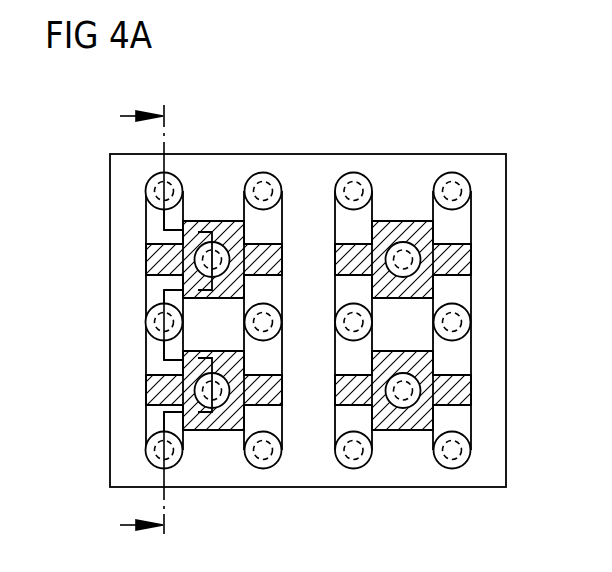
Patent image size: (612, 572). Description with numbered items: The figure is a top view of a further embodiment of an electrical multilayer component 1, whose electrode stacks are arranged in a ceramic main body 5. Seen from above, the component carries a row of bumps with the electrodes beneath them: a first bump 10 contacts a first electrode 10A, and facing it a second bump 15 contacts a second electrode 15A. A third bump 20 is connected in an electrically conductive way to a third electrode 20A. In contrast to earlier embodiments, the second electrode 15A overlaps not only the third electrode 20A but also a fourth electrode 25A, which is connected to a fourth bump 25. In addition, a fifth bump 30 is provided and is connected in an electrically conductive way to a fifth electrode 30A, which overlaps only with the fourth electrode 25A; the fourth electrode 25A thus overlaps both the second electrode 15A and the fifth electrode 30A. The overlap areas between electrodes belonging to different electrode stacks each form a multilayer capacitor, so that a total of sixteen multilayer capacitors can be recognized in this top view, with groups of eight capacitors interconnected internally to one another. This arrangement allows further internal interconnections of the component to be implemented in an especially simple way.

The semiconductor device 1 is at (299, 303).
The main body 5 is at (497, 317).
The first bump 10 is at (147, 188).
The first electrode 10A is at (147, 230).
The second bump 15 is at (147, 322).
The second electrode 15A is at (147, 298).
The third bump 20 is at (212, 233).
The third electrode 20A is at (147, 267).
The fourth bump 25 is at (222, 412).
The fourth electrode 25A is at (228, 421).
The fifth bump 30 is at (147, 449).
The fifth electrode 30A is at (148, 423).